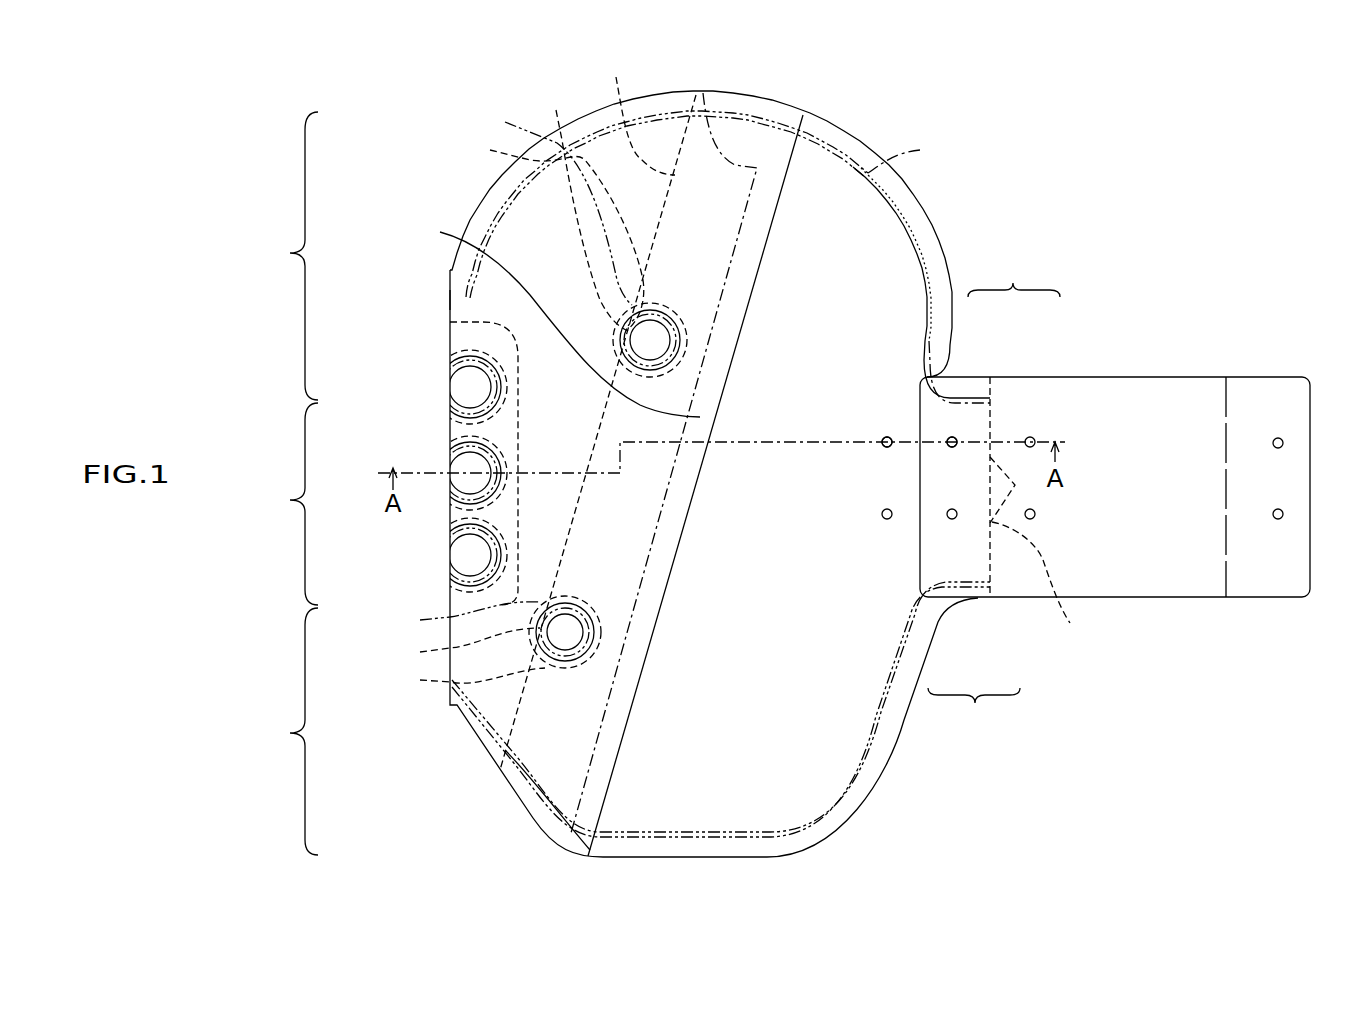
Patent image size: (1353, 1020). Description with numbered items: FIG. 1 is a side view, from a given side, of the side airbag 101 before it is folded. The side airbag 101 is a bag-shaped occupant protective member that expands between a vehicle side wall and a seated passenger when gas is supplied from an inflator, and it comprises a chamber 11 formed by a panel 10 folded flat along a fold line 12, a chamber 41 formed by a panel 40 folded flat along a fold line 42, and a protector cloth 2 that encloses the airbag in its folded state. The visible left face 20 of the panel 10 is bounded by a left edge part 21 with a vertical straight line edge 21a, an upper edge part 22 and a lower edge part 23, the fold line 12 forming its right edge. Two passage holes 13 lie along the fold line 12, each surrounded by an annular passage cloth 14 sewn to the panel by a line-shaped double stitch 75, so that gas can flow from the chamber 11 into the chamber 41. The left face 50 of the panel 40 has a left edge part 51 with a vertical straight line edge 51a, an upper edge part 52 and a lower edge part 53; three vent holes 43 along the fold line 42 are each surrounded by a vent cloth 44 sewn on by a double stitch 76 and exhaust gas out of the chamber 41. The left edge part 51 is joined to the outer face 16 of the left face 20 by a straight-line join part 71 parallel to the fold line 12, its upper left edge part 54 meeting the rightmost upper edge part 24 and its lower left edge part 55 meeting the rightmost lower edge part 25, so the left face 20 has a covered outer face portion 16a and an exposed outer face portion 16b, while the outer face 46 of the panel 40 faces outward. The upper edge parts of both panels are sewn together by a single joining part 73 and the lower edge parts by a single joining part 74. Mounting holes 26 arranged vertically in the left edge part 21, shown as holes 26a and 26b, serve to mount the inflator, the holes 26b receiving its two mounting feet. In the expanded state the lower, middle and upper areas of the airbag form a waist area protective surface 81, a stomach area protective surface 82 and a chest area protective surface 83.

The side airbag 101 is at (440, 112).
The protector cloth 2 is at (1135, 390).
The panel 10 is at (850, 217).
The chamber 11 is at (853, 680).
The fold line 12 is at (598, 410).
The passage hole 13 is at (535, 400).
The annular passage cloth 14 is at (532, 386).
The outer face 16 is at (877, 265).
The outer face portion 16a is at (543, 753).
The outer face portion 16b is at (723, 725).
The left face 20 is at (935, 285).
The left edge part 21 is at (893, 463).
The straight line edge 21a is at (1042, 586).
The upper edge part 22 is at (835, 130).
The lower edge part 23 is at (663, 840).
The rightmost upper edge part 24 is at (740, 107).
The rightmost lower edge part 25 is at (530, 803).
The mounting holes 26 is at (994, 492).
The first mounting hole 26a is at (952, 437).
The mounting holes 26b is at (887, 437).
The panel 40 is at (533, 223).
The chamber 41 is at (450, 322).
The fold line 42 is at (450, 302).
The vent hole 43 is at (450, 388).
The vent cloth 44 is at (450, 420).
The outer face 46 is at (527, 242).
The left face 50 is at (445, 187).
The left edge part 51 is at (552, 317).
The straight line edge 51a is at (603, 803).
The upper edge part 52 is at (655, 105).
The lower edge part 53 is at (512, 772).
The upper left edge part 54 is at (770, 110).
The lower left edge part 55 is at (550, 825).
The straight-line join part 71 is at (703, 93).
The joining part 73 is at (915, 147).
The joining part 74 is at (814, 807).
The double stitch 75 is at (530, 381).
The double stitch 76 is at (450, 362).
The waist area protective surface 81 is at (287, 731).
The stomach area protective surface 82 is at (287, 504).
The chest area protective surface 83 is at (287, 256).